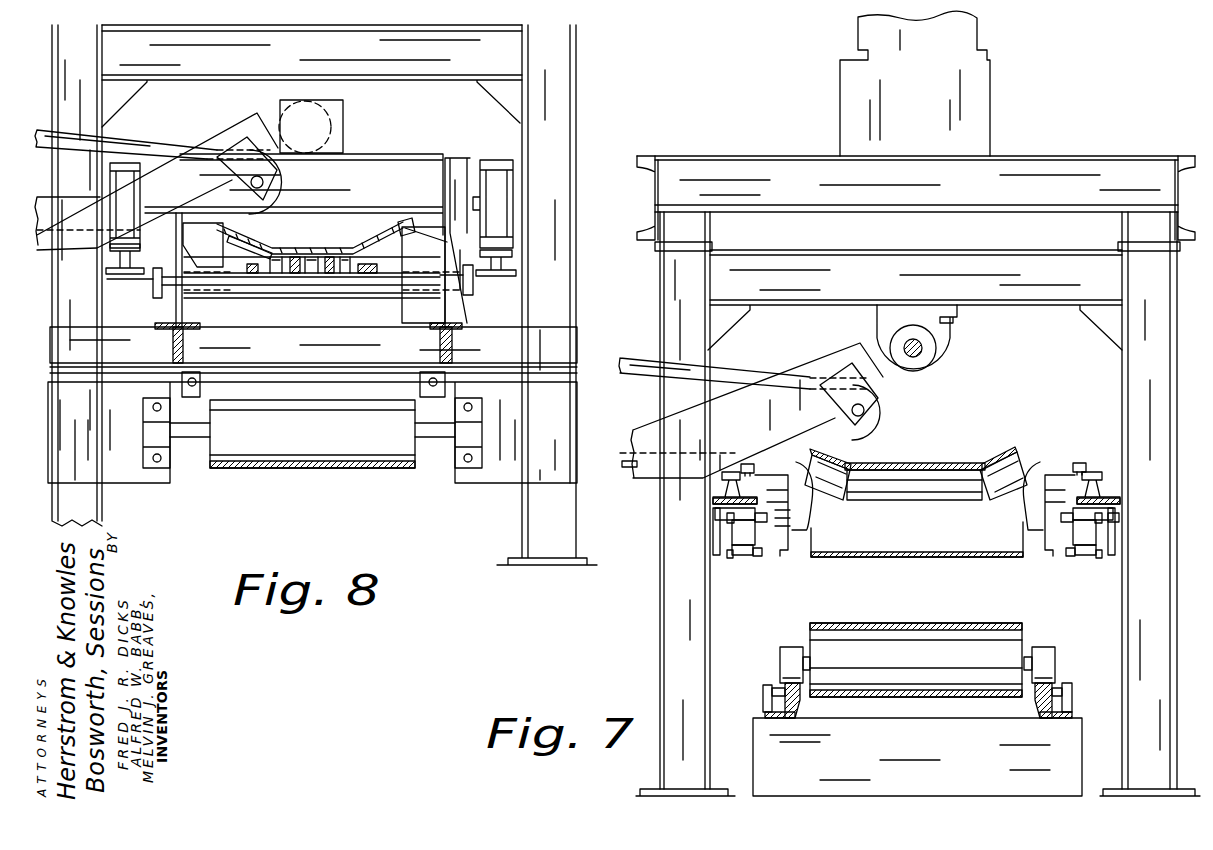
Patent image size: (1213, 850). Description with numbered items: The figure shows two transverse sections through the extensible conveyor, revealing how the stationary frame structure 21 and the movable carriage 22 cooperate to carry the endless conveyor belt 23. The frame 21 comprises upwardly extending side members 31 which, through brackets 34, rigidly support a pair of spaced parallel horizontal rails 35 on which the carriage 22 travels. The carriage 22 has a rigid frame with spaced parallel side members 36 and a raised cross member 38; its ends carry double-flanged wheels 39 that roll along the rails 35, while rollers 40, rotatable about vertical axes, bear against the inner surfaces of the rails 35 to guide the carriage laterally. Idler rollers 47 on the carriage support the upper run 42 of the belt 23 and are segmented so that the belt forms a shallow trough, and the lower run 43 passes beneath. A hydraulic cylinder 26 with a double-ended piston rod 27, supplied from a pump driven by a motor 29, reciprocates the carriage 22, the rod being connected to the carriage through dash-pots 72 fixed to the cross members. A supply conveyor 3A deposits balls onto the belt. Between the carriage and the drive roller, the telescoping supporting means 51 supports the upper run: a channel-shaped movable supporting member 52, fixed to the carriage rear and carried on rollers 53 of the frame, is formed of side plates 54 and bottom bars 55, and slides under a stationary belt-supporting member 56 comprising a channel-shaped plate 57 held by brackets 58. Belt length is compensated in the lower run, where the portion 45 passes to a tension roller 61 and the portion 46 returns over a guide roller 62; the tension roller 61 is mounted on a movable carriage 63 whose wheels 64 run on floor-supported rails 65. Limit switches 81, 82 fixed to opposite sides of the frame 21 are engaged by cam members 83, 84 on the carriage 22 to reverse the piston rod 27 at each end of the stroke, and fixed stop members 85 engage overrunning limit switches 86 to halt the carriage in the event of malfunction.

In FIG. 7, the stationary frame structure 21 is at (1053, 149).
In FIG. 7, the movable carriage 22 is at (795, 555).
In FIG. 8, the endless conveyor belt 23 is at (308, 241).
In FIG. 7, the endless conveyor belt 23 is at (928, 460).
In FIG. 7, the hydraulic cylinder 26 is at (924, 344).
In FIG. 7, the piston rod 27 is at (925, 358).
In FIG. 7, the motor 29 is at (975, 22).
In FIG. 8, the upright side member 31 is at (563, 145).
In FIG. 7, the upright side member 31 is at (1133, 380).
In FIG. 8, the bracket 34 is at (160, 312).
In FIG. 7, the bracket 34 is at (723, 537).
In FIG. 8, the rail 35 is at (500, 258).
In FIG. 7, the rail 35 is at (724, 480).
In FIG. 8, the carriage side member 36 is at (170, 297).
In FIG. 7, the carriage side member 36 is at (773, 475).
In FIG. 8, the rear raised cross member 38 is at (147, 137).
In FIG. 8, the double-flanged wheel 39 is at (500, 160).
In FIG. 7, the supply conveyor 3A is at (767, 372).
In FIG. 7, the roller 40 is at (747, 463).
In FIG. 7, the upper run of belt 42 is at (913, 465).
In FIG. 7, the lower run of belt 43 is at (948, 560).
In FIG. 7, the upper run of compensating belt portion 45 is at (916, 648).
In FIG. 8, the lower run of compensating belt portion 46 is at (307, 468).
In FIG. 7, the lower run of compensating belt portion 46 is at (900, 703).
In FIG. 7, the idler roller 47 is at (900, 497).
In FIG. 8, the telescoping supporting means 51 is at (283, 270).
In FIG. 8, the movable supporting member 52 is at (242, 254).
In FIG. 8, the rotatable roller 53 is at (203, 285).
In FIG. 8, the side plate 54 is at (240, 244).
In FIG. 8, the bottom bar 55 is at (328, 273).
In FIG. 8, the stationary belt-supporting member 56 is at (407, 233).
In FIG. 8, the plate 57 is at (365, 240).
In FIG. 8, the bracket 58 is at (195, 243).
In FIG. 7, the tension roller 61 is at (837, 643).
In FIG. 8, the guide roller 62 is at (378, 450).
In FIG. 7, the movable carriage 63 is at (793, 702).
In FIG. 7, the wheel 64 is at (763, 690).
In FIG. 7, the rail 65 is at (760, 712).
In FIG. 8, the dash-pot 72 is at (343, 115).
In FIG. 7, the limit switch 81 is at (727, 518).
In FIG. 7, the limit switch 82 is at (1103, 520).
In FIG. 7, the cam member 83 is at (793, 518).
In FIG. 7, the cam member 84 is at (1052, 517).
In FIG. 7, the stop member 85 is at (773, 563).
In FIG. 7, the overrunning limit switch 86 is at (743, 557).